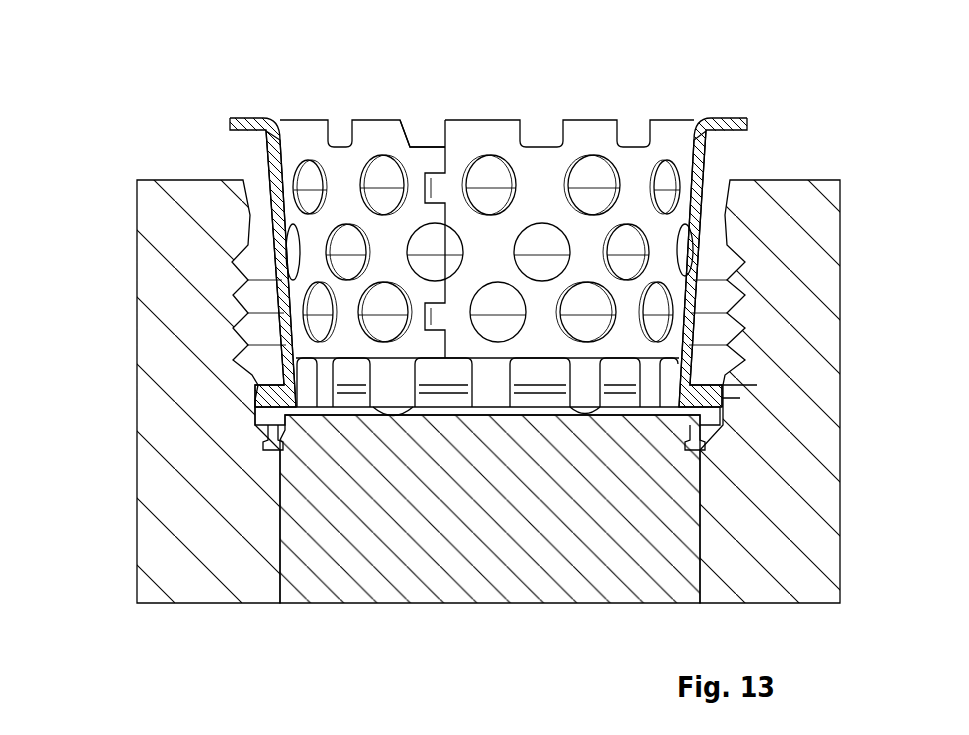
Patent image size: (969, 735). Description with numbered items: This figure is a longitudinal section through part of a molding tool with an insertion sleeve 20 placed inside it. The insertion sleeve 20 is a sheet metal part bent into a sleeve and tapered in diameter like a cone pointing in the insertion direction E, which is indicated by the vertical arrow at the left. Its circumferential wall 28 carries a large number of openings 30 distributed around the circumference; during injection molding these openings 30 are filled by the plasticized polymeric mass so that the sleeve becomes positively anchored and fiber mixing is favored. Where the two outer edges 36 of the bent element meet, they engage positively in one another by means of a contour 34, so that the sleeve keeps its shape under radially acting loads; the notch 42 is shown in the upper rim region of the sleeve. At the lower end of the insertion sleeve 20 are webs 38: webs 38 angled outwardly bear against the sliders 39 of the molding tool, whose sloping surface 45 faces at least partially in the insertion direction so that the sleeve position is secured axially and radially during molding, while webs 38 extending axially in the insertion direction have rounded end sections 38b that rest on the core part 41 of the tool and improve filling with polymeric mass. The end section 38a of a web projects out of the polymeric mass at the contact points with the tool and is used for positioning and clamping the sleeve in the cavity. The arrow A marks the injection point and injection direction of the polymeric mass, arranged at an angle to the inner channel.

The insertion sleeve 20 is at (531, 224).
The circumferential wall 28 is at (225, 262).
The openings 30 is at (672, 171).
The contour 34 is at (431, 176).
The outer edges 36 is at (444, 175).
The webs 38 is at (400, 386).
The end section 38a is at (403, 400).
The rounded end sections 38b is at (403, 398).
The sliders 39 is at (152, 272).
The core part 41 is at (655, 585).
The rim notch 42 is at (377, 133).
The sloping surface 45 is at (720, 390).
The injection point or injection direction A is at (761, 108).
The insertion direction E is at (62, 330).